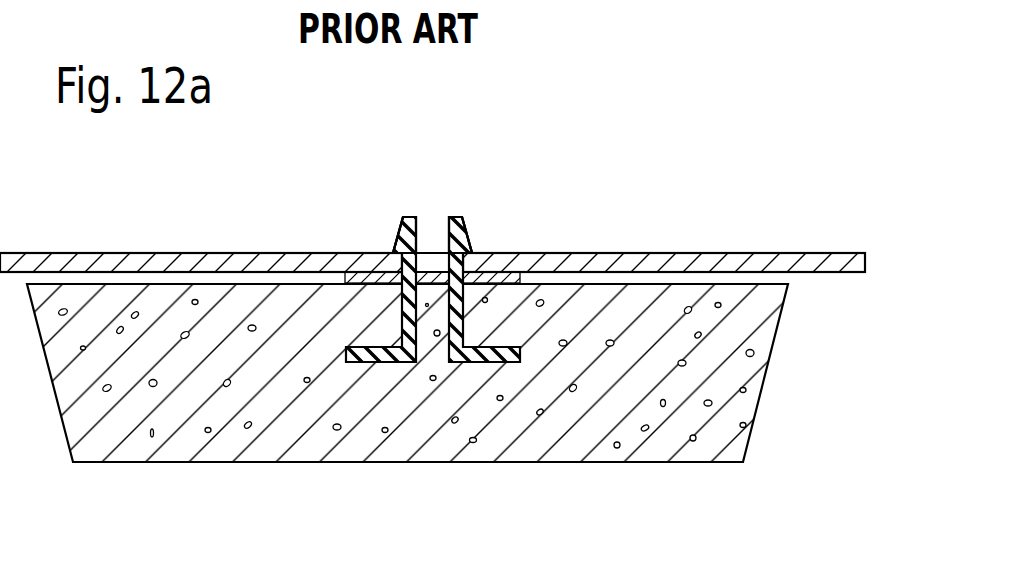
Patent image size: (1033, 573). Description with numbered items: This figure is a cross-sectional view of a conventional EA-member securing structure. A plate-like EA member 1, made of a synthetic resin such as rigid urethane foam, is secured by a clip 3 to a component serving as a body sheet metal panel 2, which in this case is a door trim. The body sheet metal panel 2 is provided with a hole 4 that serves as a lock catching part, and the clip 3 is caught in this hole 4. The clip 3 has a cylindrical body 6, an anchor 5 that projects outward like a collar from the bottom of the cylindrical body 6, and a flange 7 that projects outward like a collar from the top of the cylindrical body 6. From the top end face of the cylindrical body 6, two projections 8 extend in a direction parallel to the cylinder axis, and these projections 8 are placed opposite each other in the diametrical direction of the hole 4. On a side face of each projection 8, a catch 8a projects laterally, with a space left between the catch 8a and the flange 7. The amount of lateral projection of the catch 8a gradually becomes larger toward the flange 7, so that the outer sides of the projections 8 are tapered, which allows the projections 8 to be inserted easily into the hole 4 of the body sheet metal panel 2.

The EA member 1 is at (610, 463).
The body sheet metal panel 2 is at (719, 252).
The clip 3 is at (438, 252).
The hole 4 is at (393, 253).
The anchor 5 is at (496, 346).
The cylindrical body 6 is at (402, 316).
The flange 7 is at (488, 285).
The projection 8 is at (405, 216).
The catch 8a is at (474, 240).